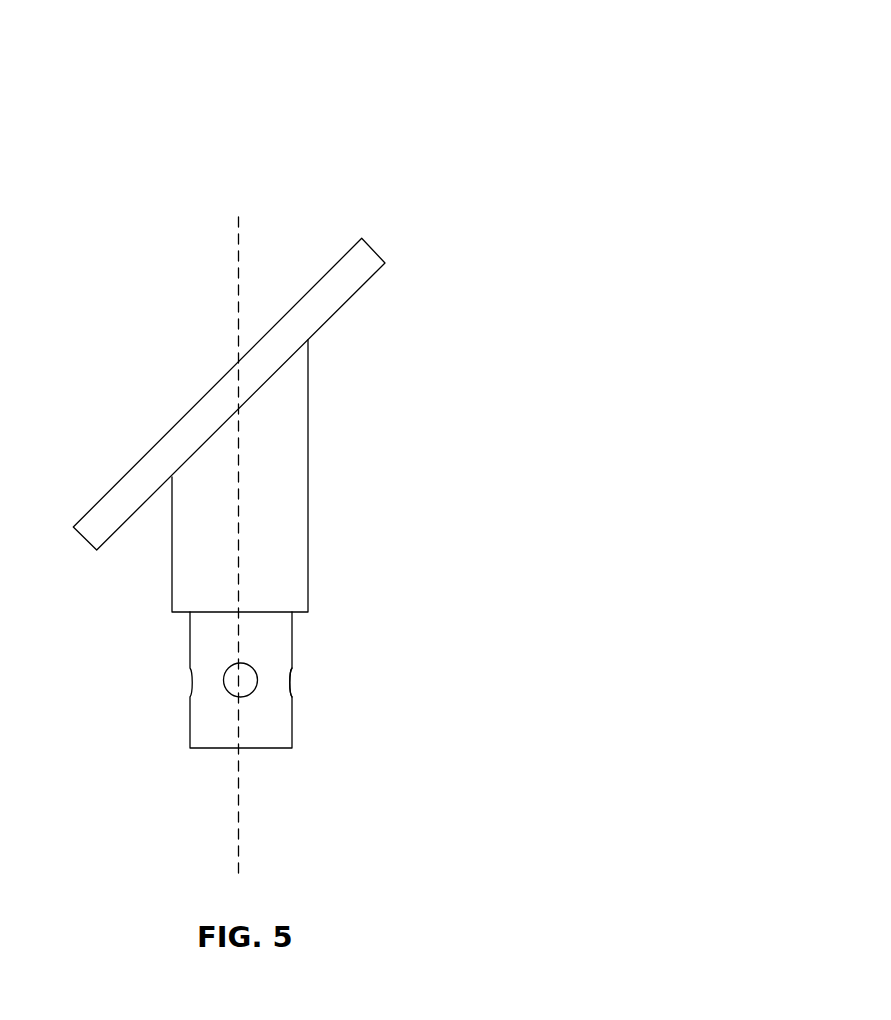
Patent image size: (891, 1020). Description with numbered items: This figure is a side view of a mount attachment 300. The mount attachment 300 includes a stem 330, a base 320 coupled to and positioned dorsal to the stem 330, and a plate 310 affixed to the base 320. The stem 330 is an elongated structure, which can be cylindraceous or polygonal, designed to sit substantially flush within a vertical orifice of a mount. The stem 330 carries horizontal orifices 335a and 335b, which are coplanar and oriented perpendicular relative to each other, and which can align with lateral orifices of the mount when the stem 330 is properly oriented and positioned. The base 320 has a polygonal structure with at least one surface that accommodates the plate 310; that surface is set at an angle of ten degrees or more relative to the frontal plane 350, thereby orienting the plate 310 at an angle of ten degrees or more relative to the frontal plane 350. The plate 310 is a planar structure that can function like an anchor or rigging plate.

The mount attachment 300 is at (735, 157).
The plate 310 is at (357, 240).
The base 320 is at (308, 431).
The stem 330 is at (275, 749).
The horizontal orifice 335a is at (291, 682).
The horizontal orifice 335b is at (223, 678).
The frontal plane 350 is at (238, 216).